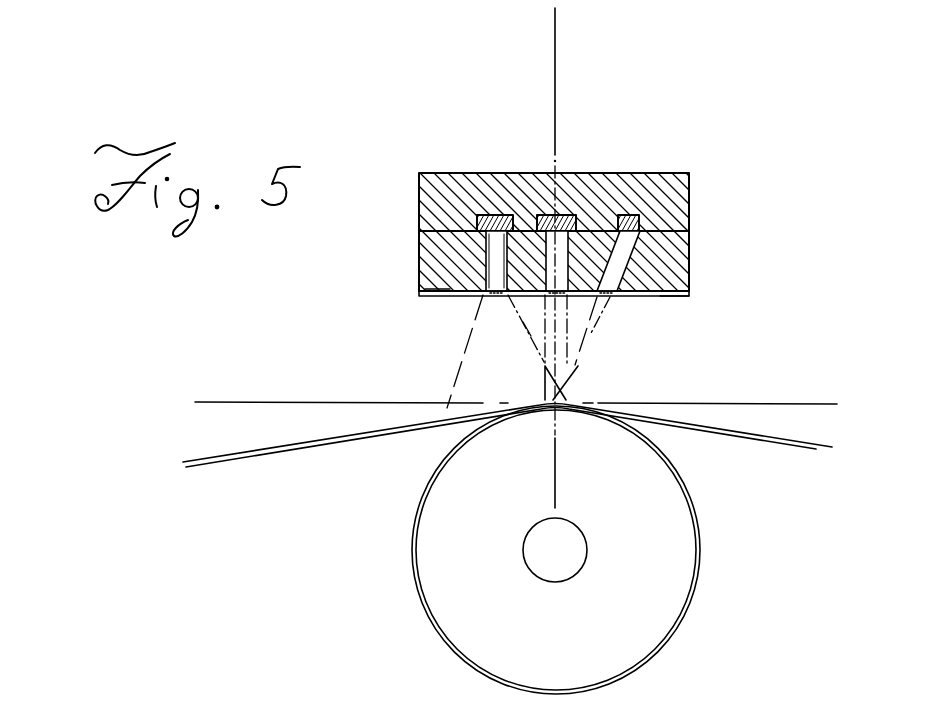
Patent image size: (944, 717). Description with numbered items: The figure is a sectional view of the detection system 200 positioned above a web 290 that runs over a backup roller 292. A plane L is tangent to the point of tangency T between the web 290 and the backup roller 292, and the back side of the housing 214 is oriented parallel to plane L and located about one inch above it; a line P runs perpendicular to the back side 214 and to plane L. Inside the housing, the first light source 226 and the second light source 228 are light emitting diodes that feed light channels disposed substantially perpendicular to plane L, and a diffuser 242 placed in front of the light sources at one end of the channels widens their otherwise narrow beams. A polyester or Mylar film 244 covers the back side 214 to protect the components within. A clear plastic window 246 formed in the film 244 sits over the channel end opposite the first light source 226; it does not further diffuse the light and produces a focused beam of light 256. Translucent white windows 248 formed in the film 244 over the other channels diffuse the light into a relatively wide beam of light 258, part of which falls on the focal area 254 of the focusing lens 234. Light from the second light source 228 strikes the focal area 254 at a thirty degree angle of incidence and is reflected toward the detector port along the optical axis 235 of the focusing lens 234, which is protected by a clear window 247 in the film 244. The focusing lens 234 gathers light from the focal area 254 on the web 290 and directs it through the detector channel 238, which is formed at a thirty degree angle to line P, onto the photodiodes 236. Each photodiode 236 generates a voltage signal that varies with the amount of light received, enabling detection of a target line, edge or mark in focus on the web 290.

The system 200 is at (451, 106).
The back side of the housing 214 is at (437, 298).
The first light source 226 is at (567, 173).
The second light source 228 is at (530, 140).
The diffuser 242 is at (600, 208).
The photodiodes 236 is at (650, 222).
The detector channel 238 is at (652, 268).
The film 244 is at (689, 297).
The focusing lens 234 is at (675, 300).
The clear plastic window 246 is at (485, 265).
The clear window 247 is at (610, 296).
The translucent white windows 248 is at (425, 290).
The optical axis 235 is at (582, 352).
The focal area 254 is at (545, 395).
The focused beam of light 256 is at (546, 318).
The wide beam of light 258 is at (473, 358).
The web 290 is at (338, 447).
The backup roller 292 is at (421, 600).
The line P is at (555, 22).
The plane L is at (806, 404).
The point of tangency T is at (566, 408).